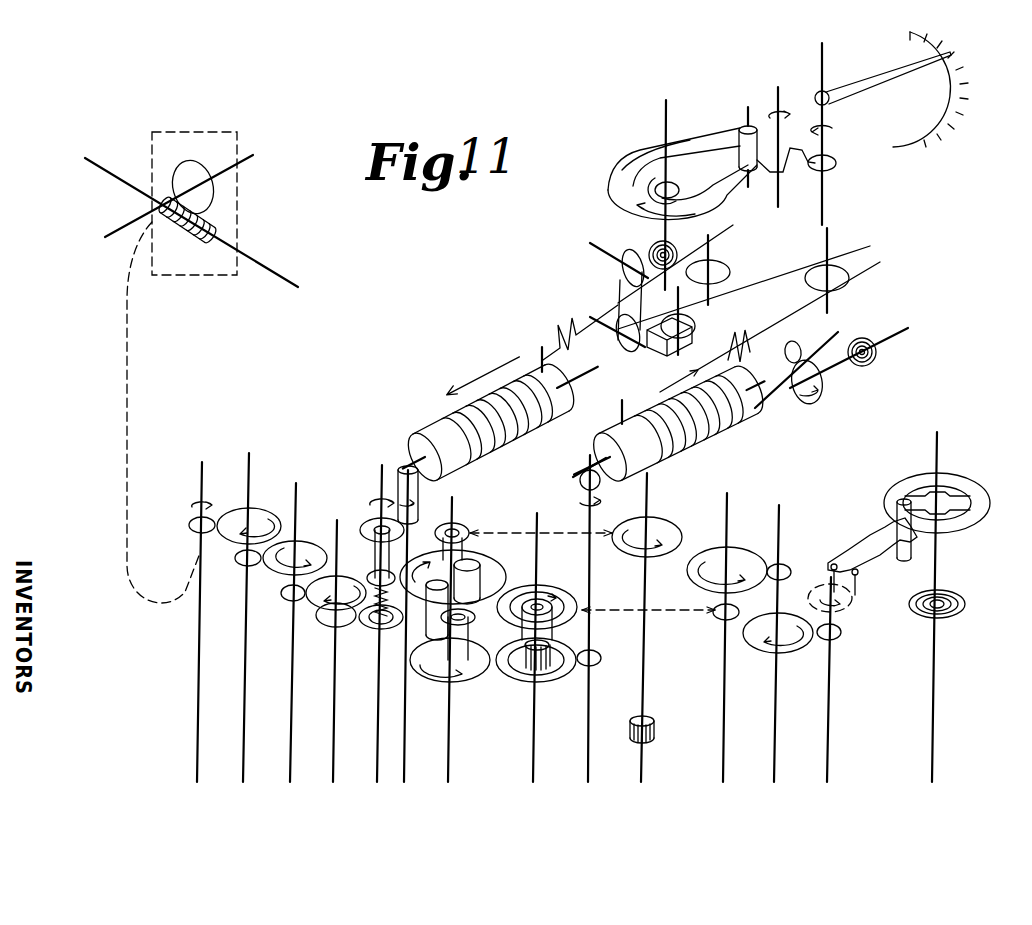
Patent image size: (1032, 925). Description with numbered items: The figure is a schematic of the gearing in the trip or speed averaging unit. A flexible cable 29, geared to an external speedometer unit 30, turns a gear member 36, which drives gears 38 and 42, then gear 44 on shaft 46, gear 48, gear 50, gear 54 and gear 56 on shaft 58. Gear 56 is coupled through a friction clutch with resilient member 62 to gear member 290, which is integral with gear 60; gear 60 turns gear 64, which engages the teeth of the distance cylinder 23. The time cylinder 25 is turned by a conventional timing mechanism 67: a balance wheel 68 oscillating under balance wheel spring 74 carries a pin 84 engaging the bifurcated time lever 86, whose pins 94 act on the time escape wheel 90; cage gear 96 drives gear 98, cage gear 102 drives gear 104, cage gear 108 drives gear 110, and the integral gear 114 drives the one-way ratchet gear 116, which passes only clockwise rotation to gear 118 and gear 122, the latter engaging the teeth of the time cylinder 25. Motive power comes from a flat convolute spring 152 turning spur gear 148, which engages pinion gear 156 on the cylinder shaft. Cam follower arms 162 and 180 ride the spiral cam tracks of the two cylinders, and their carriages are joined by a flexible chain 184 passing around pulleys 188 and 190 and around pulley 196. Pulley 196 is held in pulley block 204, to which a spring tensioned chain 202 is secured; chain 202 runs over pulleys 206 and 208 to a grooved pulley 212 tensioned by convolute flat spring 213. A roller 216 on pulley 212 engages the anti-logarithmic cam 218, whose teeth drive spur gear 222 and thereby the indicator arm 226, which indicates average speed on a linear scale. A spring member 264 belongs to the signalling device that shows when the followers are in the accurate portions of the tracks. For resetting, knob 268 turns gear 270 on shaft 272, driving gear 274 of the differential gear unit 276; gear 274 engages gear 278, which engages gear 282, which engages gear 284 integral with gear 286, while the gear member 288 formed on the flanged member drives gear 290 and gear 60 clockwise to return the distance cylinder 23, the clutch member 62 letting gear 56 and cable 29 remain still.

The distance cylinder 23 is at (440, 420).
The time cylinder 25 is at (745, 412).
The flexible cable 29 is at (128, 380).
The external speedometer unit 30 is at (251, 134).
The gear member 36 is at (189, 525).
The gear 38 is at (256, 510).
The gear 42 is at (240, 562).
The gear 44 is at (316, 545).
The shaft 46 is at (267, 743).
The gear 48 is at (286, 600).
The gear 50 is at (323, 605).
The gear 54 is at (330, 625).
The gear 56 is at (372, 622).
The shaft 58 is at (357, 758).
The gear 60 is at (365, 525).
The resilient member 62 is at (378, 632).
The gear 64 is at (420, 495).
The timing mechanism 67 is at (812, 758).
The balance wheel 68 is at (918, 480).
The balance wheel spring 74 is at (925, 612).
The pin 84 is at (900, 560).
The time lever 86 is at (858, 550).
The time escape wheel 90 is at (830, 585).
The pins 94 is at (858, 588).
The cage gear 96 is at (842, 633).
The gear 98 is at (765, 648).
The cage gear 102 is at (783, 565).
The gear 104 is at (737, 550).
The cage gear 108 is at (714, 615).
The gear 110 is at (555, 598).
The gear 114 is at (528, 660).
The one-way ratchet gear 116 is at (560, 680).
The gear 118 is at (595, 662).
The gear 122 is at (580, 482).
The spur gear 148 is at (820, 395).
The flat convolute spring 152 is at (878, 354).
The pinion gear 156 is at (795, 345).
The cam track follower arm 162 is at (618, 412).
The cam follower arm 180 is at (540, 350).
The flexible chain 184 is at (770, 300).
The pulley 188 is at (720, 265).
The pulley 190 is at (845, 275).
The pulley 196 is at (690, 332).
The spring tensioned flexible chain 202 is at (612, 290).
The pulley block 204 is at (660, 352).
The pulley 206 is at (625, 350).
The pulley 208 is at (630, 255).
The grooved pulley 212 is at (612, 178).
The convolute flat spring 213 is at (678, 250).
The roller 216 is at (753, 172).
The cam 218 is at (700, 138).
The spur gear 222 is at (838, 165).
The indicator arm 226 is at (862, 60).
The spring member 264 is at (562, 320).
The knob 268 is at (652, 740).
The gear 270 is at (688, 518).
The shaft 272 is at (643, 597).
The gear 274 is at (462, 527).
The differential gear unit 276 is at (431, 697).
The gear 278 is at (480, 568).
The gear 282 is at (384, 618).
The gear 284 is at (470, 618).
The gear 286 is at (460, 682).
The gear member 288 is at (500, 582).
The gear member 290 is at (372, 575).